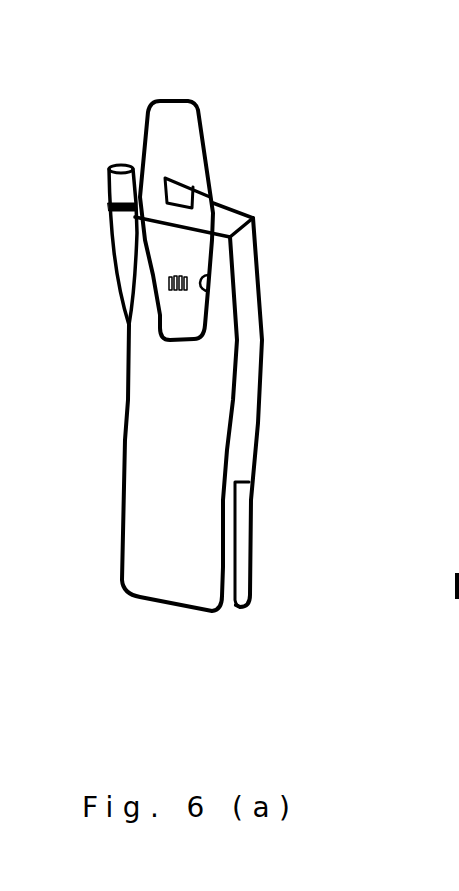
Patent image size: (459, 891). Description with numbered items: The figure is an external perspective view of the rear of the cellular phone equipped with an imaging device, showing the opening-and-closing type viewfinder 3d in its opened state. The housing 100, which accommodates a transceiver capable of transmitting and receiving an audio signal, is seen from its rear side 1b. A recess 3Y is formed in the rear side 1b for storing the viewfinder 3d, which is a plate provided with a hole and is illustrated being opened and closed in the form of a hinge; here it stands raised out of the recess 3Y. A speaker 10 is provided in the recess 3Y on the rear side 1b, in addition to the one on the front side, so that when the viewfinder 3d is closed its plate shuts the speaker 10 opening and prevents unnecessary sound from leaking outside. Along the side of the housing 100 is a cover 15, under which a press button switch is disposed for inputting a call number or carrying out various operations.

The housing 100 is at (219, 333).
The rear side 1b is at (137, 432).
The opening-and-closing type viewfinder 3d is at (203, 207).
The recess 3Y is at (208, 290).
The speaker 10 is at (117, 329).
The cover 15 is at (252, 535).